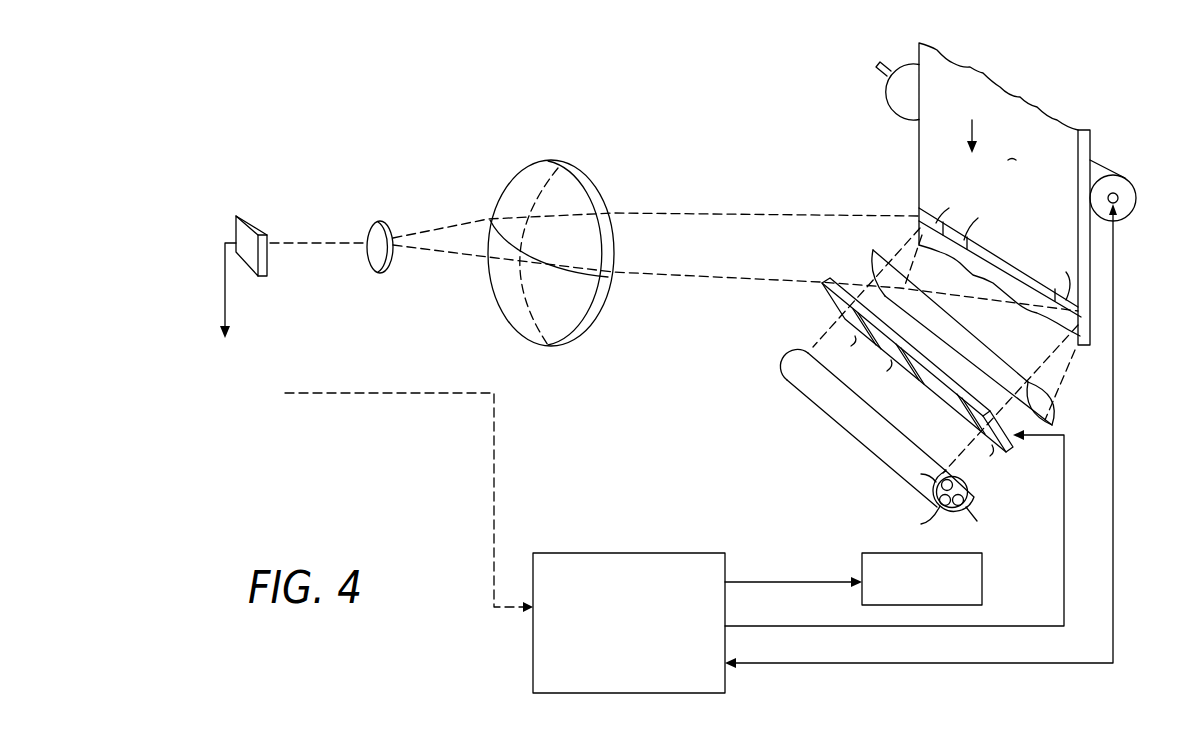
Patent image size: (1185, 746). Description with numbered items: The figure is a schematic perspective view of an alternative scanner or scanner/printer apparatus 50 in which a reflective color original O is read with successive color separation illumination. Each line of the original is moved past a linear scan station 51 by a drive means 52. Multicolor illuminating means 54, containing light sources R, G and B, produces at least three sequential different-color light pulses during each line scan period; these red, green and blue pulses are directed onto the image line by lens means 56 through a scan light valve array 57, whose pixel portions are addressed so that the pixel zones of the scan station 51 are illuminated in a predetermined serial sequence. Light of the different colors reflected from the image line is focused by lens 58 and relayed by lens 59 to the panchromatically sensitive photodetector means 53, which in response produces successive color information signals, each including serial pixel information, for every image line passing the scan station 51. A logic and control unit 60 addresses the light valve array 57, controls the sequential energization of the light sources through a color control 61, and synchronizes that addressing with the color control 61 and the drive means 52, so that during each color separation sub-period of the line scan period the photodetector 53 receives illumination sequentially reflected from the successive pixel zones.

The scanner or scanner/printer apparatus 50 is at (640, 112).
The linear scan station 51 is at (918, 213).
The drive means 52 is at (1127, 211).
The photodetector means 53 is at (258, 229).
The multicolor illuminating means 54 is at (860, 444).
The lens means 56 is at (1050, 405).
The scan light valve array 57 is at (1007, 450).
The lens 58 is at (586, 189).
The lens 59 is at (386, 236).
The logic and control unit 60 is at (663, 552).
The color control 61 is at (862, 565).